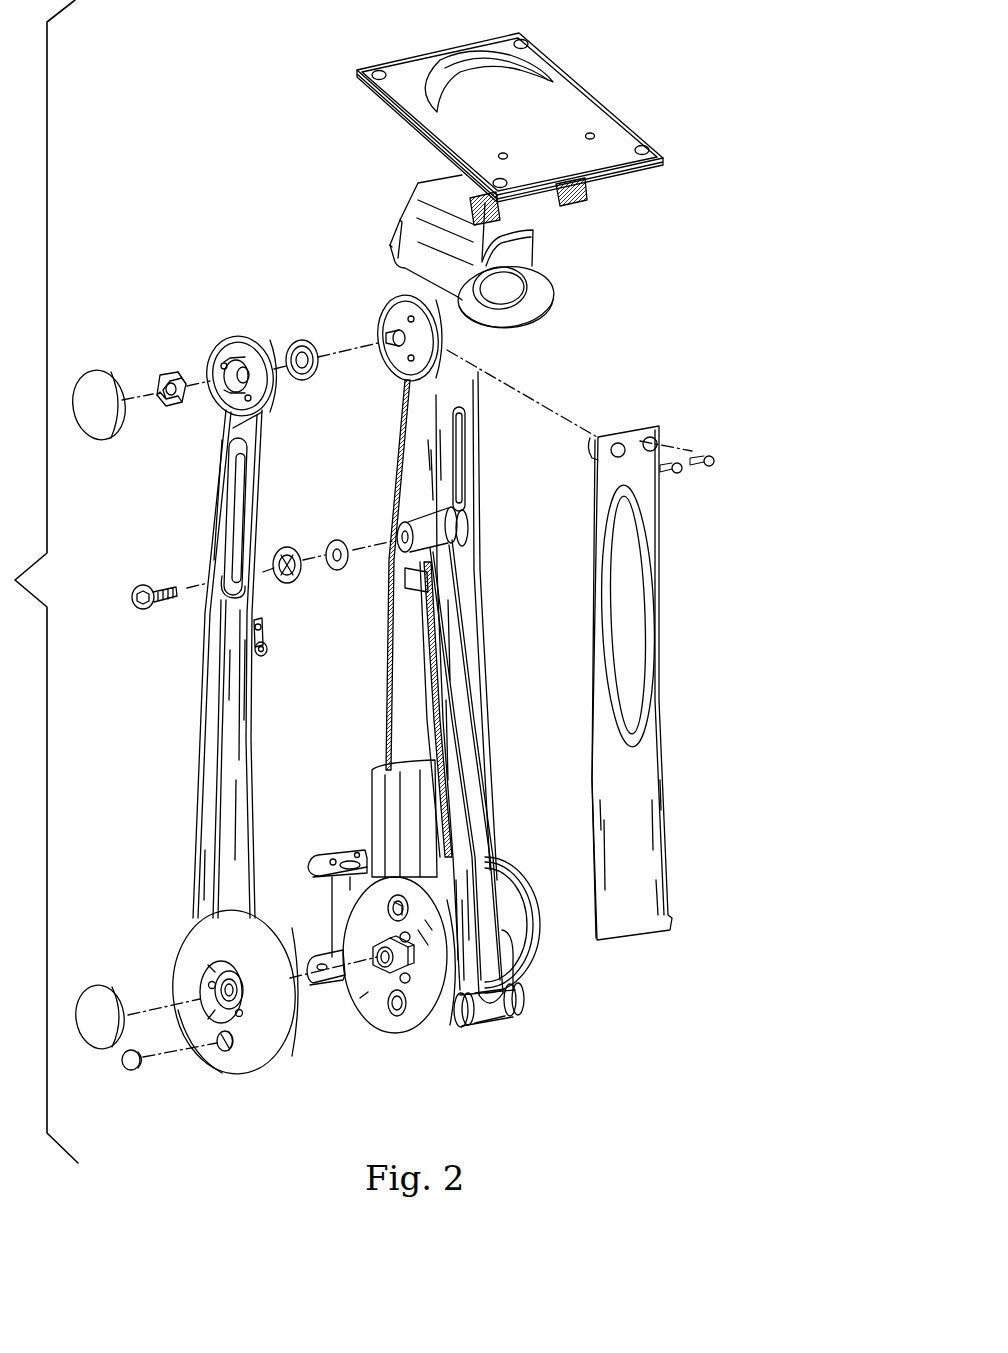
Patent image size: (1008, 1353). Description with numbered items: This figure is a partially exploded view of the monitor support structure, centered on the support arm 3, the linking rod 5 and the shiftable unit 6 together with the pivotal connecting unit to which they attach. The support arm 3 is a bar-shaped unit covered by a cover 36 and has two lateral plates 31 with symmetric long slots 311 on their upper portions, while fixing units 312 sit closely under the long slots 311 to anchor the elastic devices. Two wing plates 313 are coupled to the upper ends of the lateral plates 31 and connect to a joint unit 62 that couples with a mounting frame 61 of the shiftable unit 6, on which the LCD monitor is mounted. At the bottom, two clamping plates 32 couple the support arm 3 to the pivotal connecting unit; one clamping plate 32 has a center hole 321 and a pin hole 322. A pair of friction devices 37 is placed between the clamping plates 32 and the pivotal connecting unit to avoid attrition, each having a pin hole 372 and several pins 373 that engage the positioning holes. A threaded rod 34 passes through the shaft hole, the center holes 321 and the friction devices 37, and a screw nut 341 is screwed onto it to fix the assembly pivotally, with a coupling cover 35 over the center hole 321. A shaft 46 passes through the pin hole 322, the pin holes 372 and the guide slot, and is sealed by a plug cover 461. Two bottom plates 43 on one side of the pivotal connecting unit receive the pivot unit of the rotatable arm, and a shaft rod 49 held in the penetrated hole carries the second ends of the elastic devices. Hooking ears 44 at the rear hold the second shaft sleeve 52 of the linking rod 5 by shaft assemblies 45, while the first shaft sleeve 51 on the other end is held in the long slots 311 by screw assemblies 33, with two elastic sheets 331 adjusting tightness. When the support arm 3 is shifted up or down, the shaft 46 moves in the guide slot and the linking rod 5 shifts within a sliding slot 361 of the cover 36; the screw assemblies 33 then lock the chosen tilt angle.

The support arm 3 is at (326, 649).
The linking rod 5 is at (472, 737).
The shiftable unit 6 is at (601, 97).
The lateral plates 31 is at (389, 681).
The clamping plates 32 is at (359, 1004).
The screw assemblies 33 is at (137, 607).
The threaded rod 34 is at (380, 955).
The coupling cover 35 is at (112, 990).
The cover 36 is at (672, 683).
The friction devices 37 is at (356, 973).
The bottom plates 43 is at (344, 856).
The hooking ears 44 is at (513, 1047).
The shaft assemblies 45 is at (517, 1008).
The shaft 46 is at (390, 1010).
The shaft rod 49 is at (389, 909).
The first shaft sleeve 51 is at (428, 520).
The second shaft sleeve 52 is at (492, 1013).
The mounting frame 61 is at (414, 208).
The joint unit 62 is at (503, 289).
The long slots 311 is at (236, 522).
The fixing units 312 is at (268, 647).
The wing plates 313 is at (244, 331).
The center hole 321 is at (217, 963).
The pin hole 322 is at (223, 1050).
The elastic sheets 331 is at (298, 580).
The screw nut 341 is at (368, 998).
The sliding slot 361 is at (636, 632).
The pin hole 372 is at (388, 901).
The pins 373 is at (407, 983).
The plug cover 461 is at (128, 1073).